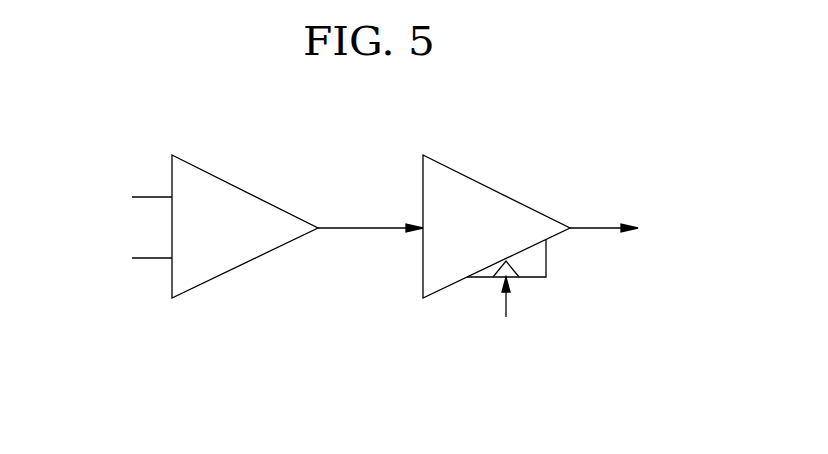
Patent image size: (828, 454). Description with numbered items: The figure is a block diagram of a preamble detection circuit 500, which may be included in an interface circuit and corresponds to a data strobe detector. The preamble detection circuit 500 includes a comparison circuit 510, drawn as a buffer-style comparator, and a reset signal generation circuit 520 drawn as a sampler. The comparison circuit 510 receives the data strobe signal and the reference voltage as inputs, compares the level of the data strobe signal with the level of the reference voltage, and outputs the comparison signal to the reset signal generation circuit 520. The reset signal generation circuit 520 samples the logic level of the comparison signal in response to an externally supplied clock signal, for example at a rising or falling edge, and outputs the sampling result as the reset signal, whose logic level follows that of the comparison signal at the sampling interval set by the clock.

The preamble detection circuit 500 is at (689, 93).
The comparison circuit 510 is at (252, 194).
The reset signal generation circuit 520 is at (502, 194).